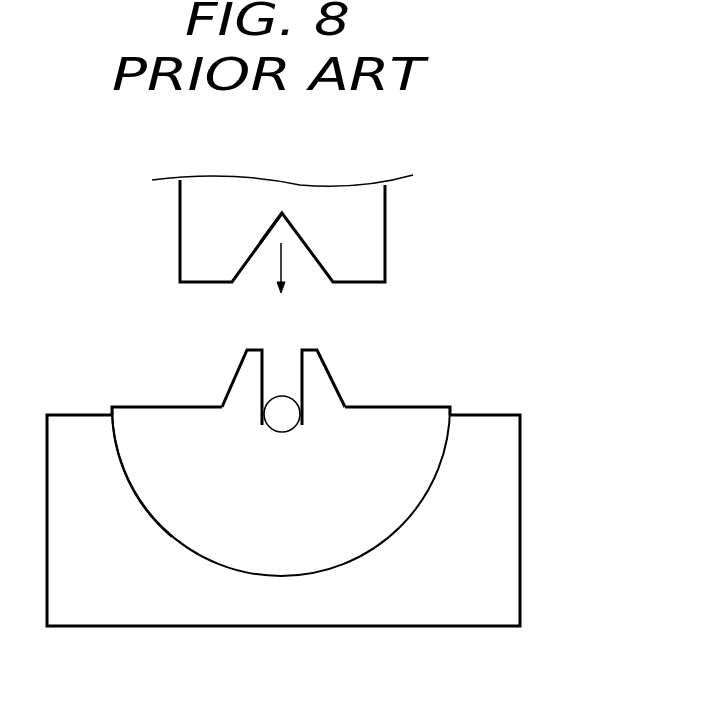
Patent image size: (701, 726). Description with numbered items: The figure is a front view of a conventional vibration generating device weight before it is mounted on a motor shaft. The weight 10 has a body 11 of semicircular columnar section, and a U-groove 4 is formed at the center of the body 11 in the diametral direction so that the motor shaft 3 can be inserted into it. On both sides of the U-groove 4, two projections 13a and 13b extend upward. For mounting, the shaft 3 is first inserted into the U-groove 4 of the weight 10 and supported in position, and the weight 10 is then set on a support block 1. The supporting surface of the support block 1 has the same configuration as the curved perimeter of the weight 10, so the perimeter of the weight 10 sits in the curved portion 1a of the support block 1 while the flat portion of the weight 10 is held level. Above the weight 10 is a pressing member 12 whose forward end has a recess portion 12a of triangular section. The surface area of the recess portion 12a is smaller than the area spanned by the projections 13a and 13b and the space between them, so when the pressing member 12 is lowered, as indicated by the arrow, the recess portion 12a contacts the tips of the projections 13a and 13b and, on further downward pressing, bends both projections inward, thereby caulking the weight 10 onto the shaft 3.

The support block 1 is at (503, 513).
The curved portion 1a is at (172, 537).
The motor shaft 3 is at (278, 430).
The U-groove 4 is at (280, 365).
The weight 10 is at (422, 406).
The body 11 is at (363, 552).
The pressing member 12 is at (370, 233).
The recess portion 12a is at (297, 253).
The projection 13a is at (320, 378).
The projection 13b is at (233, 378).